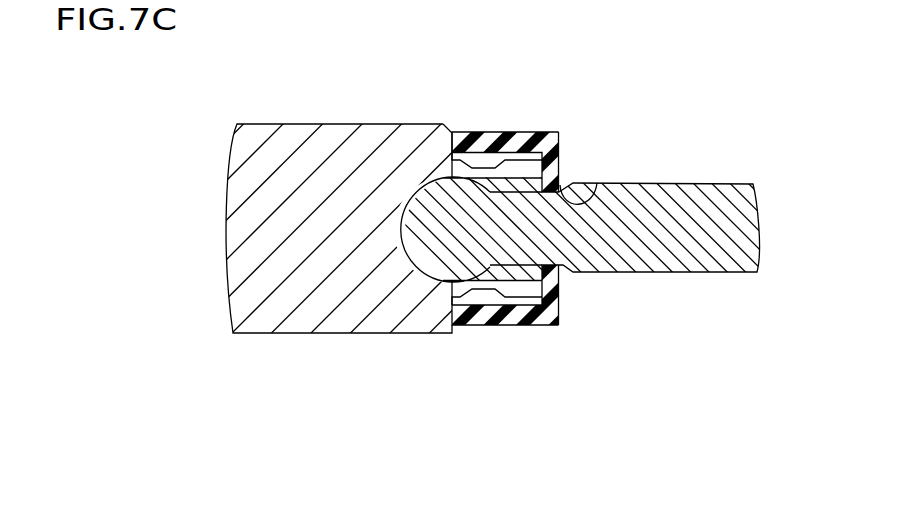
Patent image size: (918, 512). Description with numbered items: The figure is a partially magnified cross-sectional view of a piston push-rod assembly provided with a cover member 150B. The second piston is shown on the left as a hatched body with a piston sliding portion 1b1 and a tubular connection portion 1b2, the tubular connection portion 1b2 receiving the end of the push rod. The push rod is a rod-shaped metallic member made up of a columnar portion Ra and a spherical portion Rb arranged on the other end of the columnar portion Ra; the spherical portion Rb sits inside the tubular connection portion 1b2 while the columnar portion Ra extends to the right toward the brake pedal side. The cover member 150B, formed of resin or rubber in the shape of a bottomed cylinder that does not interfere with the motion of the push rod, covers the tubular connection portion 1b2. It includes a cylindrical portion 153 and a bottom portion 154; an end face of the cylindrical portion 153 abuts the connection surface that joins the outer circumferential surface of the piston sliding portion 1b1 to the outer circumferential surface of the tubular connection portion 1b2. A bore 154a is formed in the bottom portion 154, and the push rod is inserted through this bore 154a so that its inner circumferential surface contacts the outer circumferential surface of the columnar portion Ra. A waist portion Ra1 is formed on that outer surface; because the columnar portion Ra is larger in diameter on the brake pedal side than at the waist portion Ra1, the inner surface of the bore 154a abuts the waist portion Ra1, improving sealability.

The piston sliding portion 1b1 is at (318, 143).
The tubular connection portion 1b2 is at (488, 172).
The cover member 150B is at (518, 174).
The cylindrical portion 153 is at (542, 133).
The bottom portion 154 is at (561, 158).
The bore 154a is at (582, 202).
The columnar portion Ra is at (686, 257).
The waist portion Ra1 is at (567, 273).
The spherical portion Rb is at (453, 260).